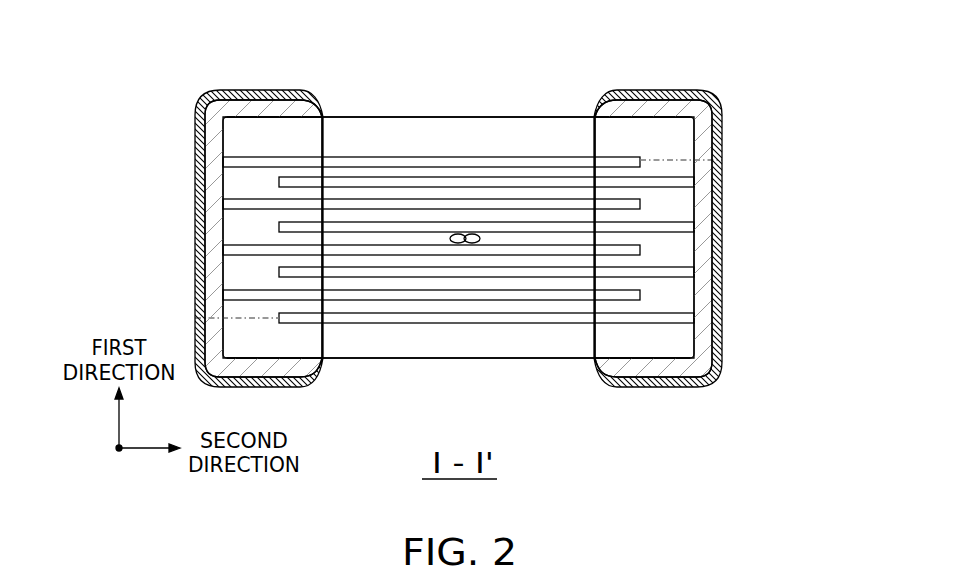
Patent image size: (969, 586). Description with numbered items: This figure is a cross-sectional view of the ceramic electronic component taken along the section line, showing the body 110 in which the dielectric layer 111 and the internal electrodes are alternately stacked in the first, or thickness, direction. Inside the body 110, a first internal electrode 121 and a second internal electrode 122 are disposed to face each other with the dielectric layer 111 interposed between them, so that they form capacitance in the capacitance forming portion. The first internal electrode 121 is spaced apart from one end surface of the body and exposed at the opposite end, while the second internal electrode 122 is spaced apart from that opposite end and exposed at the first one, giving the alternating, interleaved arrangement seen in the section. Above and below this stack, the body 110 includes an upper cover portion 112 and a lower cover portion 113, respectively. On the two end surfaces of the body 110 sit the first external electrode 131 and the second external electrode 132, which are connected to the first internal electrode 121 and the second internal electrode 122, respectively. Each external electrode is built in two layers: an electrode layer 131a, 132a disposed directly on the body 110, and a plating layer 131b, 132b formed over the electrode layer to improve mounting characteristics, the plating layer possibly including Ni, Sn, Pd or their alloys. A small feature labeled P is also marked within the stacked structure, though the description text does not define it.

The body 110 is at (392, 117).
The dielectric layer 111 is at (341, 189).
The upper cover portion 112 is at (465, 133).
The lower cover portion 113 is at (377, 343).
The first internal electrode 121 is at (525, 160).
The second internal electrode 122 is at (578, 175).
The first external electrode 131 is at (184, 238).
The electrode layer 131a is at (213, 170).
The plating layer 131b is at (202, 196).
The second external electrode 132 is at (735, 238).
The electrode layer 132a is at (707, 143).
The plating layer 132b is at (718, 172).
The pore P is at (461, 245).